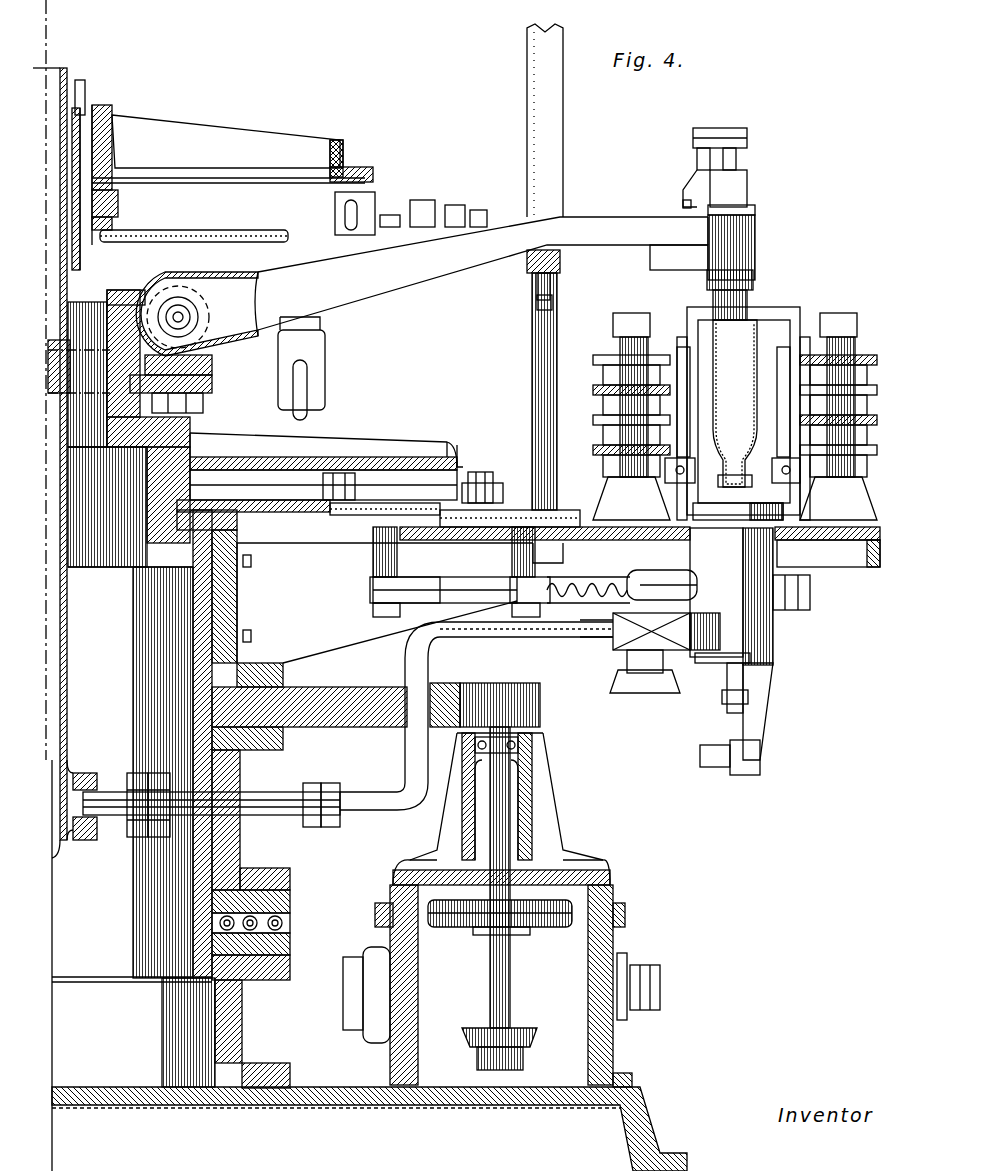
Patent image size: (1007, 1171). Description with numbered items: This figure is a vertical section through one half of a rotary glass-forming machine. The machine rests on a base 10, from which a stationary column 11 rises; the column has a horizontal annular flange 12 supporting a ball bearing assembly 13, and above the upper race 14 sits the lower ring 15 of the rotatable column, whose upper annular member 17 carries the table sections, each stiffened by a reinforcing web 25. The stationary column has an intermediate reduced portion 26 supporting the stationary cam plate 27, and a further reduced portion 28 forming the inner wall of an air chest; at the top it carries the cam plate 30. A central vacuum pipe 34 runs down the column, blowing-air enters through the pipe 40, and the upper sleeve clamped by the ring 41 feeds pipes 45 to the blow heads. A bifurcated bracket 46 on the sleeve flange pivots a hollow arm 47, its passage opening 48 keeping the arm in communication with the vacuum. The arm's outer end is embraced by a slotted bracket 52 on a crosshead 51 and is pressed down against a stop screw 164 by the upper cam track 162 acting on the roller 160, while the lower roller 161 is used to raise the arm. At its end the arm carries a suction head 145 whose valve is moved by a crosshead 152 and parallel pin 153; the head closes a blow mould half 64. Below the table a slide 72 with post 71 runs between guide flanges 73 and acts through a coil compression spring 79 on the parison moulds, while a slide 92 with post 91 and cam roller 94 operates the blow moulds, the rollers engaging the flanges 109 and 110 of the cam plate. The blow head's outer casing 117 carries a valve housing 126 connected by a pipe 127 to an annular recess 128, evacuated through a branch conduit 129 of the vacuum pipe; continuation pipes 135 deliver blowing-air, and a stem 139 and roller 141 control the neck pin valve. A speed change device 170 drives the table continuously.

The base 10 is at (369, 1129).
The stationary column 11 is at (243, 1025).
The horizontal annular flange 12 is at (278, 952).
The ball bearing assembly 13 is at (288, 922).
The upper race 14 is at (283, 900).
The lower ring 15 is at (230, 865).
The upper annular member 17 is at (225, 628).
The reinforcing web 25 is at (400, 632).
The intermediate reduced portion 26 is at (160, 533).
The stationary cam plate 27 is at (343, 445).
The further reduced portion 28 is at (120, 290).
The second cam plate 30 is at (253, 143).
The central vacuum pipe 34 is at (50, 73).
The blowing-air pipe 40 is at (85, 97).
The clamping ring 41 is at (105, 203).
The blowing-air pipes 45 is at (265, 233).
The bifurcated bracket 46 is at (212, 355).
The hollow arm 47 is at (427, 260).
The air passage opening 48 is at (165, 285).
The crosshead 51 is at (562, 262).
The slotted bracket 52 is at (553, 180).
The blow mould half 64 is at (772, 312).
The downwardly projecting post 71 is at (515, 565).
The slide 72 is at (567, 517).
The guide flange 73 is at (477, 490).
The coil compression spring 79 is at (445, 587).
The downwardly projecting post 91 is at (373, 565).
The slide 92 is at (373, 520).
The cam roller 94 is at (323, 490).
The peripheral flange 109 is at (463, 467).
The downwardly projecting flange 110 is at (317, 490).
The outer casing 117 is at (750, 633).
The valve housing 126 is at (623, 655).
The pipe 127 is at (553, 630).
The annular recess 128 is at (217, 783).
The branch conduit 129 is at (107, 797).
The continuation pipe 135 is at (672, 558).
The stem 139 is at (733, 670).
The roller 141 is at (720, 772).
The suction head 145 is at (757, 277).
The crosshead 152 is at (717, 138).
The parallel pin 153 is at (702, 285).
The upper roller 160 is at (357, 203).
The lower roller 161 is at (310, 372).
The upper cam track 162 is at (362, 165).
The stop screw 164 is at (533, 272).
The speed change device 170 is at (558, 857).